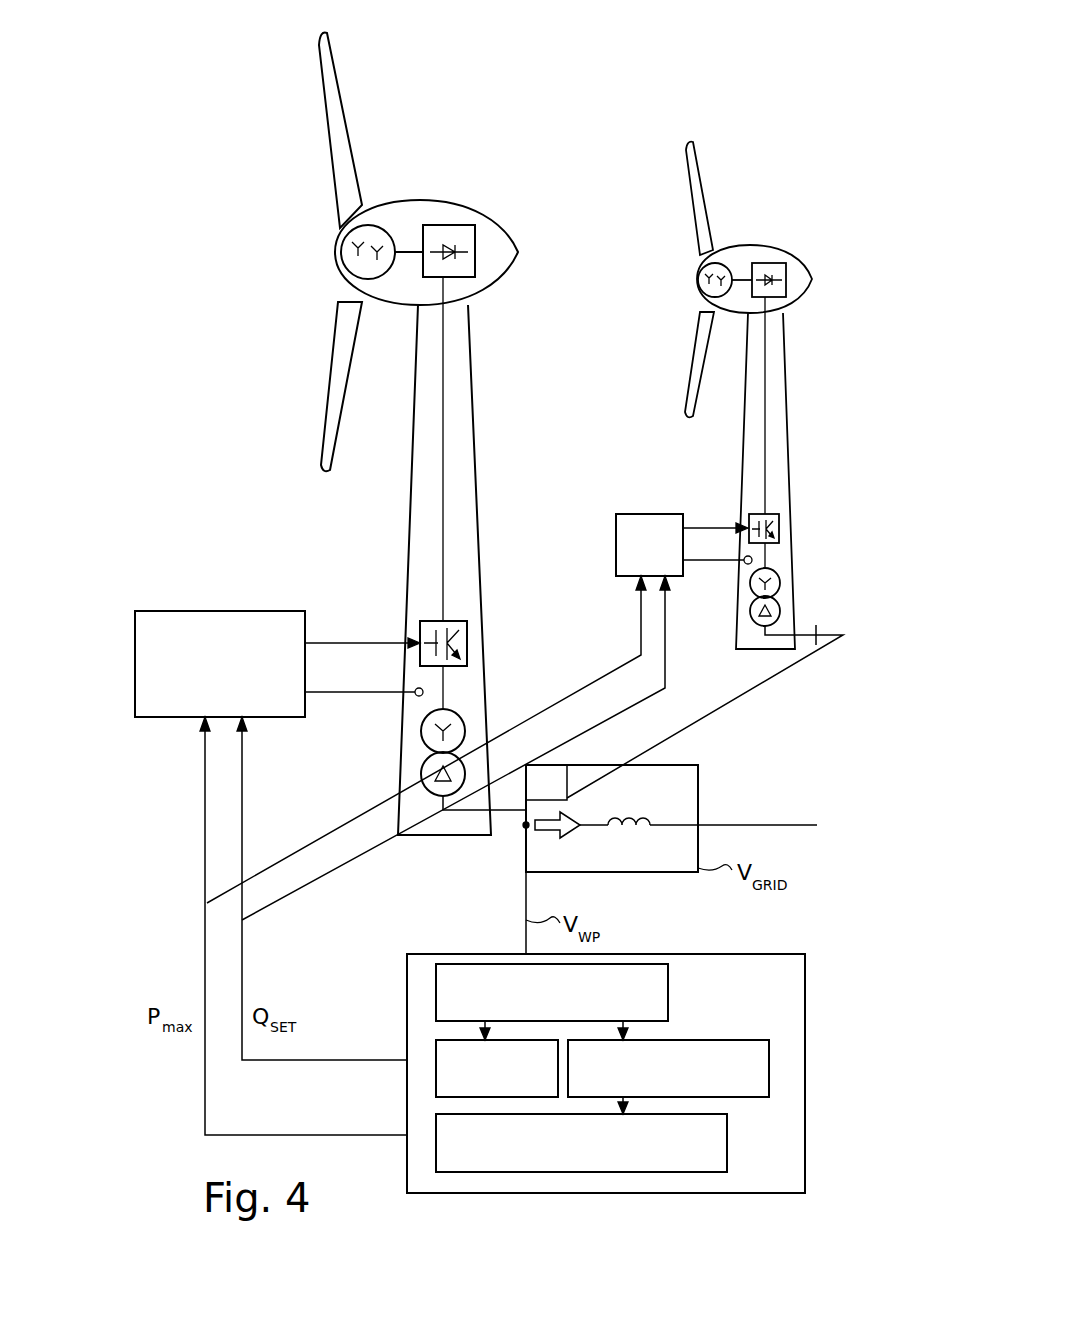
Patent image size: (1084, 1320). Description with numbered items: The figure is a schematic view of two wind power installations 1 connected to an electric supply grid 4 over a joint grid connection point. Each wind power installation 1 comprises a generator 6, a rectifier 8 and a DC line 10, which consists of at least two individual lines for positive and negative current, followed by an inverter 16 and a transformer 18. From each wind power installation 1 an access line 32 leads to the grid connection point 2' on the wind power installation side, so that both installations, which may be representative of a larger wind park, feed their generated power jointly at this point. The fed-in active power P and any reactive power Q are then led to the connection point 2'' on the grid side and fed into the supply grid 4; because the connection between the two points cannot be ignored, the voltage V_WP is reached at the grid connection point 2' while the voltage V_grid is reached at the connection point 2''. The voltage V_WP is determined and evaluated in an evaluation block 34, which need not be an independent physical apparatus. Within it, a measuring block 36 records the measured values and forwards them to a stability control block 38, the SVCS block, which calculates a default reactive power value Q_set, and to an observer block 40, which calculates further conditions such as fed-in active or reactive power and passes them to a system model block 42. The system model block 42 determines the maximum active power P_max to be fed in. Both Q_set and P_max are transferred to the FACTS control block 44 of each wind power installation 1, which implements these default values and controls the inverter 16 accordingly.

The wind power installation 1 is at (497, 178).
The generator 6 is at (345, 244).
The rectifier 8 is at (470, 226).
The DC line 10 is at (443, 437).
The inverter 16 is at (467, 630).
The transformer 18 is at (460, 718).
The FACTS control block 44 is at (177, 611).
The access line 32 is at (458, 812).
The grid connection point on the wind power installation side 2' is at (595, 831).
The connection point on the grid side 2'' is at (735, 844).
The supply grid 4 is at (797, 825).
The evaluation block 34 is at (613, 1073).
The measuring block 36 is at (436, 981).
The stability control block 38 is at (436, 1045).
The observer block 40 is at (769, 1060).
The system model block 42 is at (436, 1119).